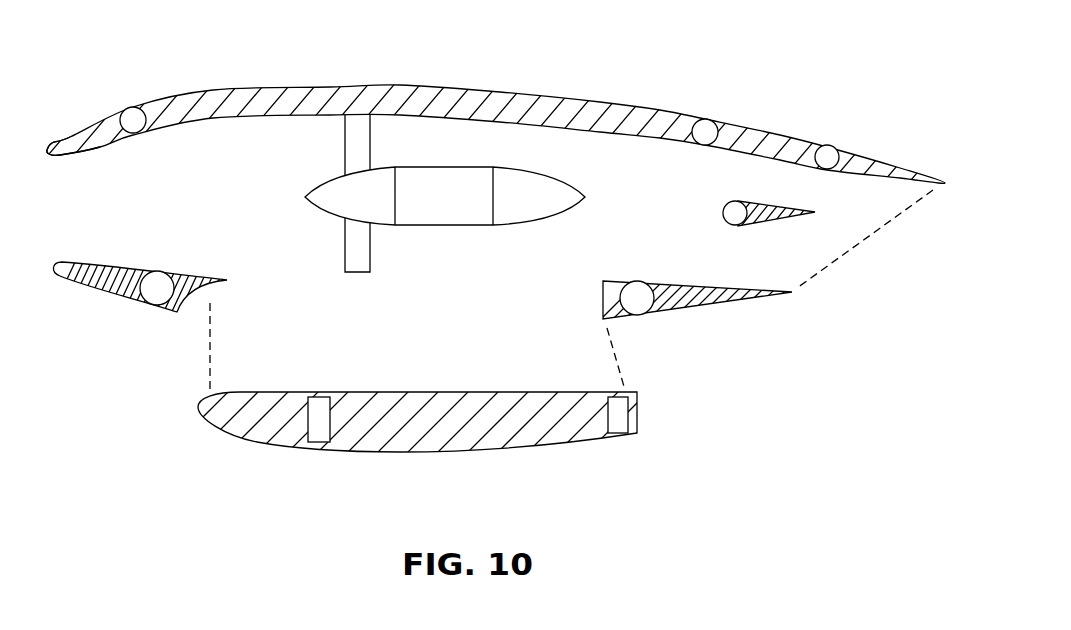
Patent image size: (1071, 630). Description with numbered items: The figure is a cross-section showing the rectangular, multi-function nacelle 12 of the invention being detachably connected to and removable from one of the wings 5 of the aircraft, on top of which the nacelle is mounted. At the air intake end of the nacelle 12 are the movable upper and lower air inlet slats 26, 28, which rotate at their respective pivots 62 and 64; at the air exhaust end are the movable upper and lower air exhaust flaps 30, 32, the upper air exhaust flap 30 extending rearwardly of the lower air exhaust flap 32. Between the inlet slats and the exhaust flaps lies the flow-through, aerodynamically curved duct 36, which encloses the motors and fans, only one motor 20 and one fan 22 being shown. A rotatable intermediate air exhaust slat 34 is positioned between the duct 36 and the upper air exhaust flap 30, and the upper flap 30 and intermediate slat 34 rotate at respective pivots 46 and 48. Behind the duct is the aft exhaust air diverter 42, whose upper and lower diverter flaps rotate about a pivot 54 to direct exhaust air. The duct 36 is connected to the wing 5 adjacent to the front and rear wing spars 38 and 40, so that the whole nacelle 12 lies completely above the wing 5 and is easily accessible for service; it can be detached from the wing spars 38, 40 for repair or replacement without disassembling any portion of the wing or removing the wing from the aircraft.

The wing 5 is at (425, 441).
The nacelle 12 is at (532, 100).
The motor 20 is at (442, 175).
The fan 22 is at (360, 125).
The upper air inlet slat 26 is at (73, 130).
The lower air inlet slat 28 is at (135, 318).
The upper air exhaust flap 30 is at (885, 158).
The lower air exhaust flap 32 is at (718, 307).
The intermediate air exhaust slat 34 is at (757, 137).
The flow-through duct 36 is at (243, 90).
The front wing spar 38 is at (318, 428).
The rear wing spar 40 is at (615, 420).
The aft exhaust air diverter 42 is at (790, 224).
The pivot 46 is at (832, 148).
The pivot 48 is at (708, 120).
The pivot 54 is at (727, 208).
The pivot 62 is at (130, 110).
The pivot 64 is at (155, 305).